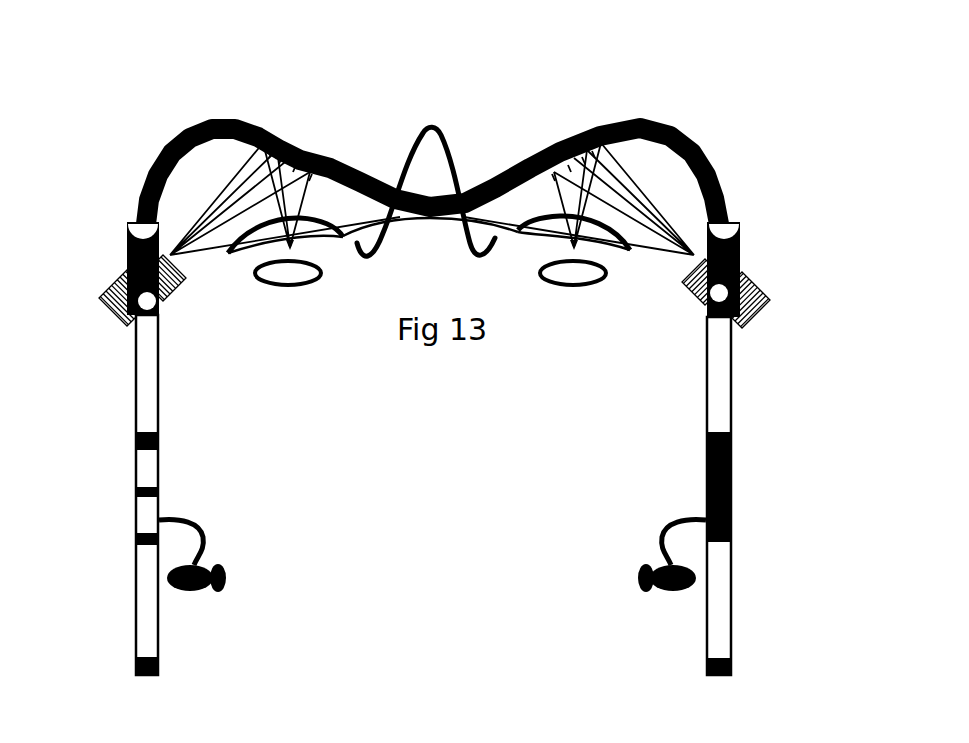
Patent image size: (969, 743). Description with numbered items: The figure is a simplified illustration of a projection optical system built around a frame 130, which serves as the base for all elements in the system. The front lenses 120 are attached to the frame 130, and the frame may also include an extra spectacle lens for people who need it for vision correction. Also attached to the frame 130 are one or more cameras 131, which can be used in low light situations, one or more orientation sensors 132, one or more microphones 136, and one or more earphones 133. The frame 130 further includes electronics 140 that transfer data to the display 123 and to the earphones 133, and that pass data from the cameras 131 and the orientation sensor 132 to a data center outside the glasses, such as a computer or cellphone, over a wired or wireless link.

The front lenses 120 is at (556, 140).
The frame 130 is at (672, 131).
The cameras 131 is at (132, 222).
The microphones 136 is at (133, 274).
The display 123 is at (100, 294).
The electronics 140 is at (140, 398).
The orientation sensors 132 is at (135, 470).
The earphones 133 is at (223, 568).